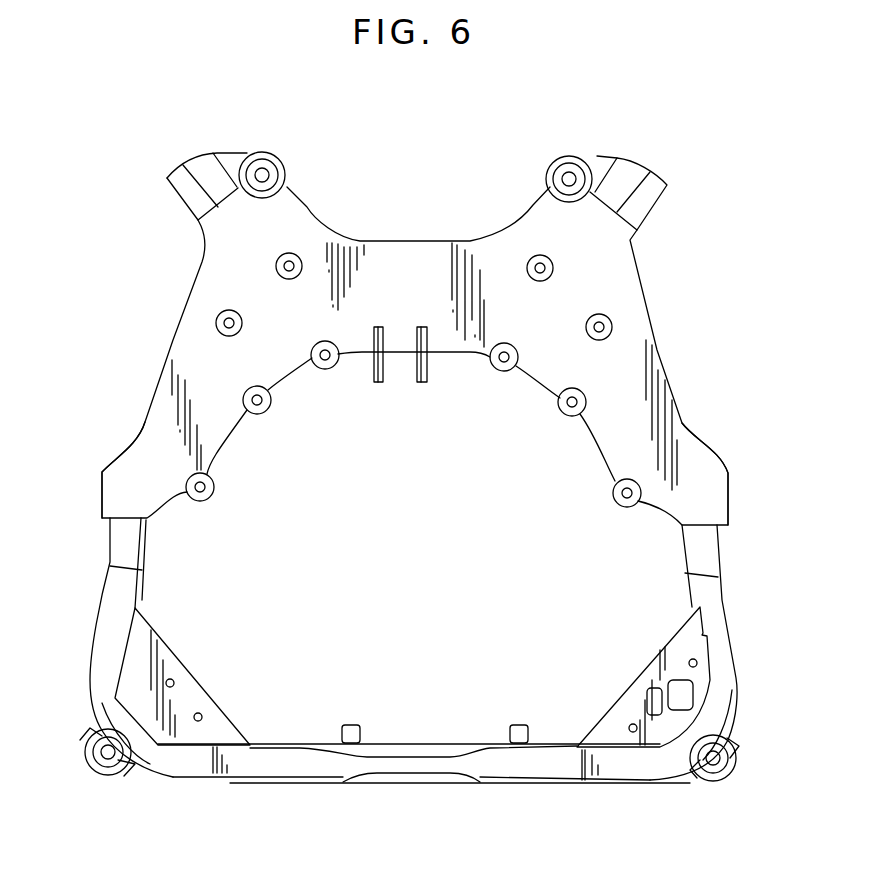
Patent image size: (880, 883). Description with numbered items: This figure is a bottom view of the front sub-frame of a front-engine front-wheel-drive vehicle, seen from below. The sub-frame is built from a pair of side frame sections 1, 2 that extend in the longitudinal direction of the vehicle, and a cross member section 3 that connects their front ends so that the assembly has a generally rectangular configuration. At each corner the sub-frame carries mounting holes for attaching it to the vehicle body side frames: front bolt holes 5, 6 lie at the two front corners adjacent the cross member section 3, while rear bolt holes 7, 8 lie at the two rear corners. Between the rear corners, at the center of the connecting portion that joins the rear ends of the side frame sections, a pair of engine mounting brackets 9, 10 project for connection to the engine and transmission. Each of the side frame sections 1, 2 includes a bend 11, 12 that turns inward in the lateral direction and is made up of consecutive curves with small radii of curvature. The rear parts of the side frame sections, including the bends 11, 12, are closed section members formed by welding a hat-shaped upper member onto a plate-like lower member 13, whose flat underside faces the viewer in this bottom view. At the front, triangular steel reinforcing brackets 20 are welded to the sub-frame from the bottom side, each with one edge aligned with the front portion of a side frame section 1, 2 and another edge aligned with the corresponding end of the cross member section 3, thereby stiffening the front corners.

The side frame section 1 is at (117, 577).
The side frame section 2 is at (713, 585).
The cross member section 3 is at (477, 762).
The front bolt hole 5 is at (98, 750).
The front bolt hole 6 is at (727, 758).
The rear bolt hole 7 is at (273, 172).
The rear bolt hole 8 is at (553, 178).
The engine mounting bracket 9 is at (372, 382).
The engine mounting bracket 10 is at (426, 382).
The bend 11 is at (100, 467).
The bend 12 is at (730, 480).
The lower member 13 is at (637, 330).
The reinforcing bracket 20 is at (198, 698).